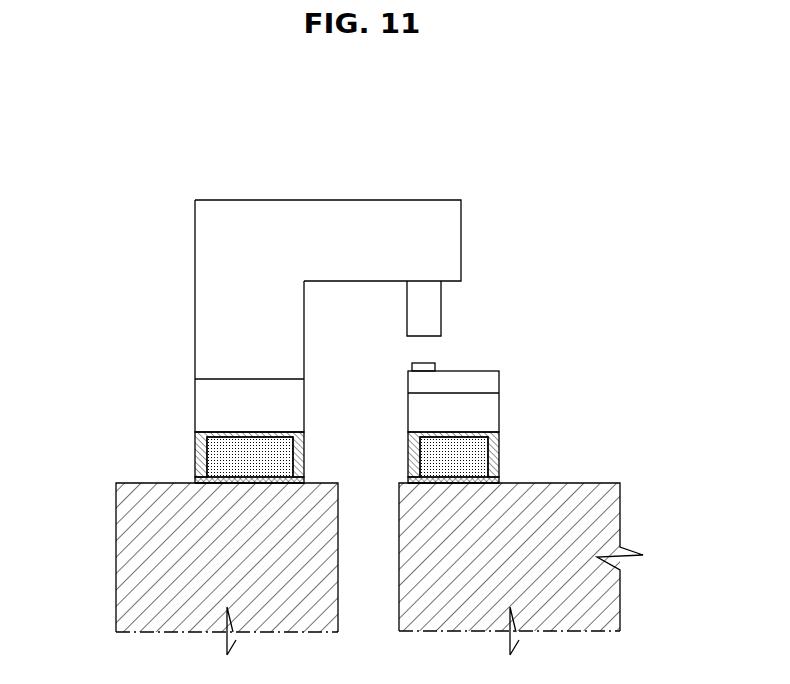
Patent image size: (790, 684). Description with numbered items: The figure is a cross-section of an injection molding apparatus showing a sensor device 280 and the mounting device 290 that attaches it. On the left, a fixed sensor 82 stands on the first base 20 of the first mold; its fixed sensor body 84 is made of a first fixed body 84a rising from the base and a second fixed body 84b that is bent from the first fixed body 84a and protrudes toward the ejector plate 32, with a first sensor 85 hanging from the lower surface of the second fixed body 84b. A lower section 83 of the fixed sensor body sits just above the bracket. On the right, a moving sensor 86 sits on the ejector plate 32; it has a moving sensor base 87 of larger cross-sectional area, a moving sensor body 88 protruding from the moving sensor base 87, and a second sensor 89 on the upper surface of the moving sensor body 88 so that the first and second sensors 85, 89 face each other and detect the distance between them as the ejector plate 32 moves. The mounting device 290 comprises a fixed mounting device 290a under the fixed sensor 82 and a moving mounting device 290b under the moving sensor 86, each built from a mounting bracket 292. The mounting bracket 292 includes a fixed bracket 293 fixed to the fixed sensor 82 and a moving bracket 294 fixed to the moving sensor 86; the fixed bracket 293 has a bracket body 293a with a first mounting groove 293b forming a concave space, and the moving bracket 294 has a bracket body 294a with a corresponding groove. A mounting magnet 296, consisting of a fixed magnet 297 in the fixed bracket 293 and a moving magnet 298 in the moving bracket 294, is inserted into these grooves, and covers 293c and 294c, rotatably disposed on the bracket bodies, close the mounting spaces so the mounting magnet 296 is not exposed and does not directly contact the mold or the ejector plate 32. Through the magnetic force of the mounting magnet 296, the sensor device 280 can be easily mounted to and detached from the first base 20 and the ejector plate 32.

The sensor device 280 is at (166, 173).
The fixed sensor 82 is at (186, 233).
The fixed sensor body 84 is at (322, 316).
The first fixed body 84a is at (215, 310).
The second fixed body 84b is at (437, 227).
The base portion 83 is at (213, 393).
The first sensor 85 is at (440, 298).
The moving sensor 86 is at (509, 373).
The moving sensor base 87 is at (493, 403).
The moving sensor body 88 is at (475, 378).
The second sensor 89 is at (418, 362).
The mounting device 290 is at (370, 527).
The fixed mounting device 290a is at (186, 438).
The moving mounting device 290b is at (510, 431).
The mounting bracket 292 is at (300, 526).
The fixed bracket 293 is at (298, 452).
The bracket body 293a is at (303, 471).
The first mounting groove 293b is at (275, 442).
The cover 293c is at (278, 483).
The moving bracket 294 is at (478, 441).
The bracket body 294a is at (498, 470).
The cover 294c is at (458, 483).
The mounting magnet 296 is at (184, 459).
The fixed magnet 297 is at (213, 467).
The moving magnet 298 is at (417, 483).
The first base 20 is at (122, 542).
The ejector plate 32 is at (612, 515).